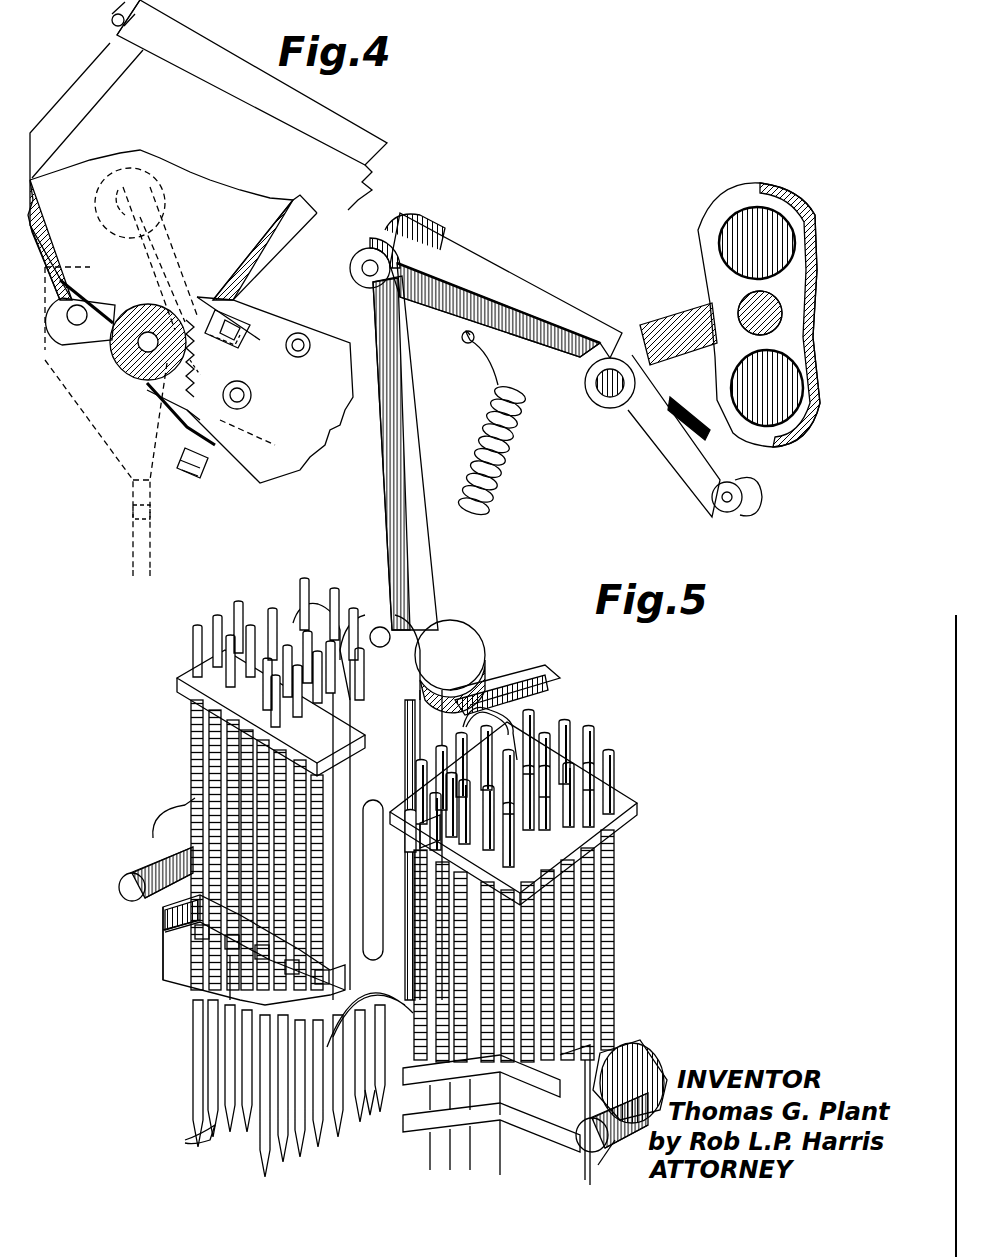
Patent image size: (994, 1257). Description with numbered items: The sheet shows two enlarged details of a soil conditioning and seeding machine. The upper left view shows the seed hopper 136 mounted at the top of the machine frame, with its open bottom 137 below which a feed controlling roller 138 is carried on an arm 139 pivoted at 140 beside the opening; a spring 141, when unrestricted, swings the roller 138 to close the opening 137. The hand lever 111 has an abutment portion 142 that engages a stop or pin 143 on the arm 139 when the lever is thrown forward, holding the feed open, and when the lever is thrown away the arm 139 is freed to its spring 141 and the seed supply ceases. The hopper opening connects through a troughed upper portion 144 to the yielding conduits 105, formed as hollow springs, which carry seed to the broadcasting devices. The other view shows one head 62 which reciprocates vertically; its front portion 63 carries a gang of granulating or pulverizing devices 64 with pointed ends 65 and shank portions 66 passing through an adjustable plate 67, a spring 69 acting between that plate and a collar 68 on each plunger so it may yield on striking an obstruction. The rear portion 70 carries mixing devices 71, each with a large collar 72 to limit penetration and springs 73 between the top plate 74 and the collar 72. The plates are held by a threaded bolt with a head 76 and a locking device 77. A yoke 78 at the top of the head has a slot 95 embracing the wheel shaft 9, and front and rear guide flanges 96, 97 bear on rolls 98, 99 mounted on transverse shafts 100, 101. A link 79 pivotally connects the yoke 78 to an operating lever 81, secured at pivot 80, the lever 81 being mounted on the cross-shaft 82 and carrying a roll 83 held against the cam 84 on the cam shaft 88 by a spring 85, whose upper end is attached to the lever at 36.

In FIG. 4, the seed hopper 136 is at (80, 78).
In FIG. 4, the open bottom 137 is at (125, 305).
In FIG. 4, the feed controlling roller 138 is at (140, 382).
In FIG. 4, the arm 139 is at (178, 408).
In FIG. 4, the pivot 140 is at (75, 330).
In FIG. 4, the spring 141 is at (179, 358).
In FIG. 4, the abutment portion 142 is at (237, 412).
In FIG. 4, the stop or pin 143 is at (198, 478).
In FIG. 4, the troughed upper portion 144 is at (115, 452).
In FIG. 4, the hand lever 111 is at (305, 450).
In FIG. 4, the yielding members 105 is at (163, 560).
In FIG. 5, the pivot 80 is at (362, 274).
In FIG. 5, the operating lever 81 is at (540, 302).
In FIG. 5, the cross-shaft 82 is at (610, 400).
In FIG. 5, the roll 83 is at (762, 508).
In FIG. 5, the cam 84 is at (705, 270).
In FIG. 5, the cam shaft 88 is at (738, 315).
In FIG. 5, the spring anchor 36 is at (470, 348).
In FIG. 5, the spring 85 is at (530, 448).
In FIG. 5, the link 79 is at (418, 562).
In FIG. 5, the yoke 78 is at (455, 668).
In FIG. 5, the locking device 77 is at (330, 585).
In FIG. 5, the wheel shaft 9 is at (537, 678).
In FIG. 5, the head 76 is at (300, 600).
In FIG. 5, the shank portions 66 is at (193, 642).
In FIG. 5, the adjustable plate 67 is at (177, 688).
In FIG. 5, the spring 69 is at (192, 758).
In FIG. 5, the roll 98 is at (166, 815).
In FIG. 5, the transverse shaft 100 is at (125, 875).
In FIG. 5, the collar 68 is at (190, 928).
In FIG. 5, the front guide flange 96 is at (163, 938).
In FIG. 5, the front portion 63 is at (165, 962).
In FIG. 5, the granulating or pulverizing devices 64 is at (200, 1043).
In FIG. 5, the pointed ends 65 is at (200, 1132).
In FIG. 5, the head 62 is at (357, 1122).
In FIG. 5, the slot 95 is at (397, 940).
In FIG. 5, the collar 72 is at (425, 1085).
In FIG. 5, the rear portion 70 is at (420, 1148).
In FIG. 5, the top plate 74 is at (625, 815).
In FIG. 5, the springs 73 is at (605, 893).
In FIG. 5, the mixing devices 71 is at (612, 950).
In FIG. 5, the roll 99 is at (665, 1062).
In FIG. 5, the rear guide flange 97 is at (589, 1162).
In FIG. 5, the transverse shaft 101 is at (612, 1136).